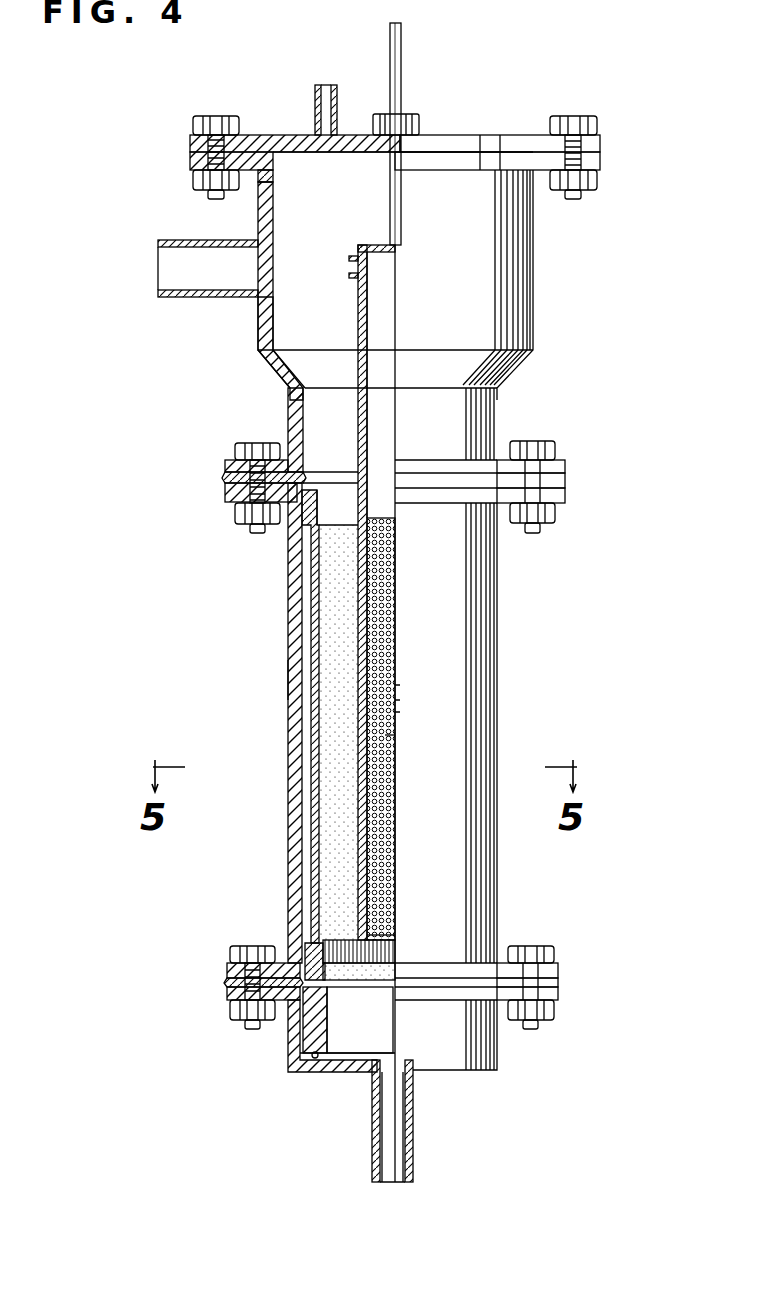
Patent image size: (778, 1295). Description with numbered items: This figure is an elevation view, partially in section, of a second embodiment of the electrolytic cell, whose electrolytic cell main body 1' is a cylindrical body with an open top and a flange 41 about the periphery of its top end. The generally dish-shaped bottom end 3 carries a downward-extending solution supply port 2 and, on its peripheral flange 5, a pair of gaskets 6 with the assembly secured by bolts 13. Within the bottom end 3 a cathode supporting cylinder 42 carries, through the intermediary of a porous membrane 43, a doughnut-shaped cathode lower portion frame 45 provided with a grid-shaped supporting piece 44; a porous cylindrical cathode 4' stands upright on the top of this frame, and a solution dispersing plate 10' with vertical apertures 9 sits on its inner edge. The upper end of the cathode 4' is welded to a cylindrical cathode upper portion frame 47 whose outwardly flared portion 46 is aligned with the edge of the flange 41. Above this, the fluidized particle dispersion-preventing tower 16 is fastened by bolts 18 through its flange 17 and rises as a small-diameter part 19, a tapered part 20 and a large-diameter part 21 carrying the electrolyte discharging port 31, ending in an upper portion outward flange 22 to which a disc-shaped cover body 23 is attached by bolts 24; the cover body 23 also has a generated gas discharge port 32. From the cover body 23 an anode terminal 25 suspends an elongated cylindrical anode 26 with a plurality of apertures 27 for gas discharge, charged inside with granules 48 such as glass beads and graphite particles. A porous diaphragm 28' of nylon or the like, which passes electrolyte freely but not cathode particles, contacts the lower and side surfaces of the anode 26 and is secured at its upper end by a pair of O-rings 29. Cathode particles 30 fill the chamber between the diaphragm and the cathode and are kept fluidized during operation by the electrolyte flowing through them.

The electrolytic cell main body 1' is at (259, 680).
The solution supply port 2 is at (375, 1118).
The bottom end 3 is at (294, 1060).
The porous cylindrical cathode 4' is at (371, 723).
The peripheral flange 5 is at (235, 996).
The gaskets 6 is at (228, 988).
The vertical apertures 9 is at (345, 966).
The solution dispersing plate 10' is at (401, 907).
The bolts 13 is at (248, 949).
The fluidized particle dispersion-preventing tower 16 is at (540, 281).
The flange 17 is at (228, 463).
The bolts 18 is at (248, 500).
The small-diameter part 19 is at (290, 416).
The tapered part 20 is at (272, 364).
The large-diameter part 21 is at (262, 330).
The upper portion outward flange 22 is at (262, 177).
The cover body 23 is at (292, 135).
The bolts 24 is at (220, 116).
The anode terminal 25 is at (401, 76).
The anode 26 is at (380, 523).
The apertures 27 is at (396, 667).
The porous diaphragm 28' is at (414, 734).
The O-rings 29 is at (349, 277).
The cathode particles 30 is at (330, 623).
The electrolyte discharging port 31 is at (165, 251).
The generated gas discharge port 32 is at (337, 102).
The flange 41 is at (228, 500).
The cathode supporting cylinder 42 is at (312, 1024).
The porous membrane 43 is at (364, 990).
The grid-shaped supporting piece 44 is at (390, 971).
The cathode lower portion frame 45 is at (302, 946).
The outwardly flared portion 46 is at (226, 479).
The cathode upper portion frame 47 is at (305, 526).
The granules 48 is at (396, 712).